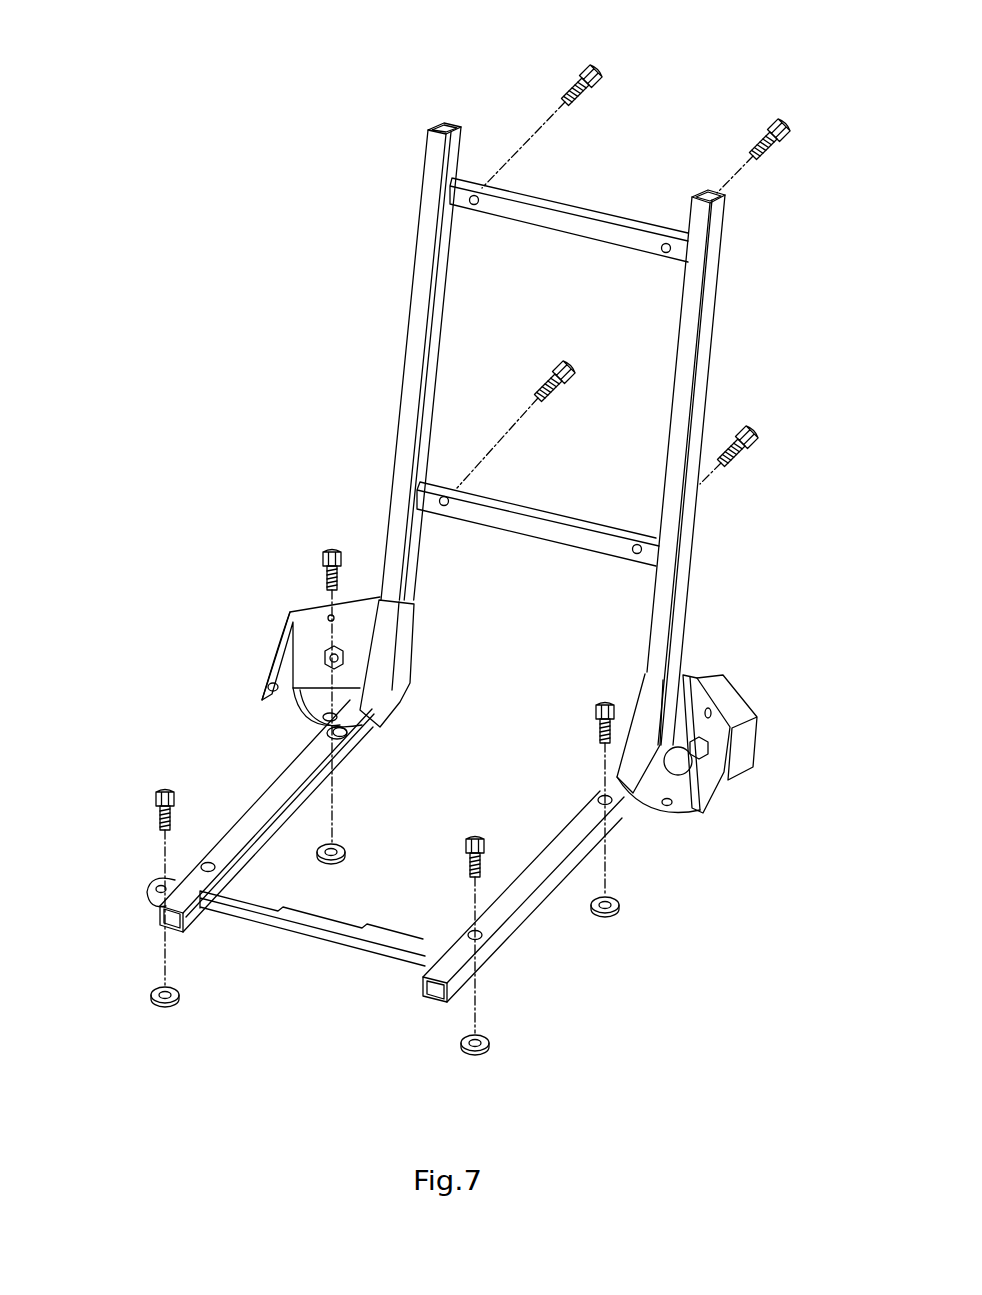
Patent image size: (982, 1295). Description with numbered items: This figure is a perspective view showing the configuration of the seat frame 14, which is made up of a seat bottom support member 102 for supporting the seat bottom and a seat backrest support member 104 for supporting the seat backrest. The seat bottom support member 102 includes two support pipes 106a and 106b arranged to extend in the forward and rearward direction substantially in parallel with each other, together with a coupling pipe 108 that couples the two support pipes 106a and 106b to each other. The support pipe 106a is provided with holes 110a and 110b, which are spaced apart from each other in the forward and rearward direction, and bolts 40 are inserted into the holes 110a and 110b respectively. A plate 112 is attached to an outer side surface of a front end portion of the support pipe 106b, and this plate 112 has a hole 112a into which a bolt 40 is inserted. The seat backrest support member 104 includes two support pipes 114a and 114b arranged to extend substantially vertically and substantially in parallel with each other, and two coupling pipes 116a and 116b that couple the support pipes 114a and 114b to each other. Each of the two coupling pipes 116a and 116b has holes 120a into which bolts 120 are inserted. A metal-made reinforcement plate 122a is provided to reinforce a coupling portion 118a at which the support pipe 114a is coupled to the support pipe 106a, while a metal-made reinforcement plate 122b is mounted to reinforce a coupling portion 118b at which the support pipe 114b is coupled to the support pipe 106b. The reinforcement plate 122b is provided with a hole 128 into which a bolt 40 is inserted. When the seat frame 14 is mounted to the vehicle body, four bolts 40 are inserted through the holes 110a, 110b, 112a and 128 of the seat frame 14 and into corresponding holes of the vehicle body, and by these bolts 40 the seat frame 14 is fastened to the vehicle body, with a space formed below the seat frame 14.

The seat frame 14 is at (395, 197).
The bolt 40 is at (325, 562).
The seat bottom support member 102 is at (622, 837).
The seat backrest support member 104 is at (735, 292).
The support pipe 106a is at (535, 905).
The support pipe 106b is at (272, 803).
The coupling pipe 108 is at (300, 935).
The hole 110a is at (470, 932).
The hole 110b is at (600, 795).
The plate 112 is at (150, 905).
The hole 112a is at (160, 880).
The support pipe 114a is at (703, 396).
The support pipe 114b is at (420, 362).
The coupling pipe 116a is at (552, 220).
The coupling pipe 116b is at (523, 512).
The coupling portion 118a is at (727, 790).
The coupling portion 118b is at (414, 685).
The bolt 120 is at (584, 67).
The hole 120a is at (474, 195).
The reinforcement plate 122a is at (650, 690).
The reinforcement plate 122b is at (400, 650).
The hole 128 is at (293, 683).